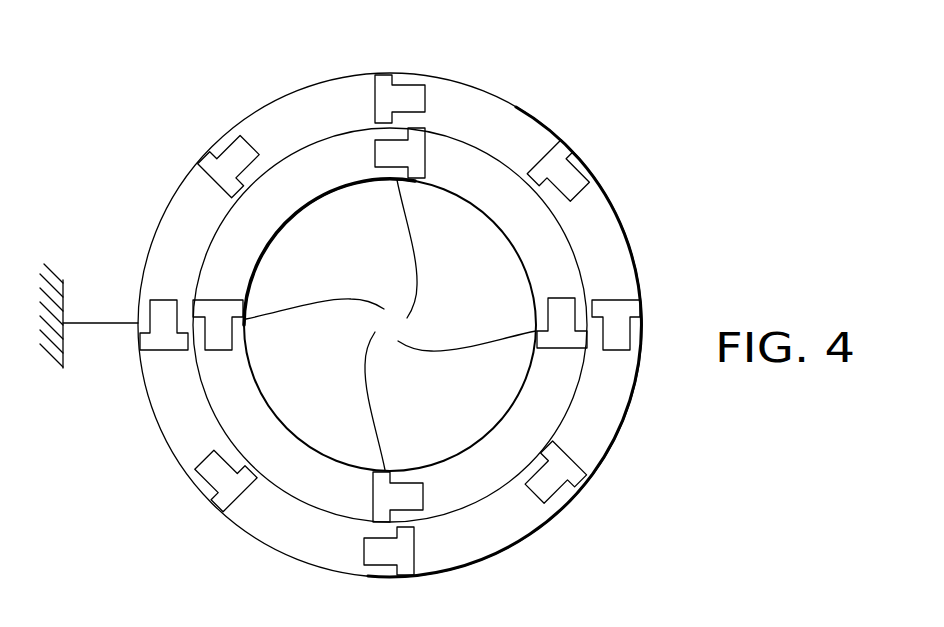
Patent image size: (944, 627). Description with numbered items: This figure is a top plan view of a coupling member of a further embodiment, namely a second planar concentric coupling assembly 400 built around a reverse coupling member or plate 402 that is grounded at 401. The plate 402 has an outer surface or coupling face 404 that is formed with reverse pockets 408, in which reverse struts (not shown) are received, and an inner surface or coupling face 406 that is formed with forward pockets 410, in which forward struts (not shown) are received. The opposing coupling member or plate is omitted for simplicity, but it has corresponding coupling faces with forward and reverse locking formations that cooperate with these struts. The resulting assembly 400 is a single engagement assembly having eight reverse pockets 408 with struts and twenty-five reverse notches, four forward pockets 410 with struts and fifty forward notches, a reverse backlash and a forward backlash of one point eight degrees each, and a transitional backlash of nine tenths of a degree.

The second planar concentric coupling assembly 400 is at (541, 115).
The ground 401 is at (63, 276).
The reverse coupling member or plate 402 is at (489, 103).
The outer surface or coupling face 404 is at (448, 88).
The inner surface or coupling face 406 is at (548, 252).
The reverse pockets 408 is at (404, 80).
The forward pockets 410 is at (391, 325).